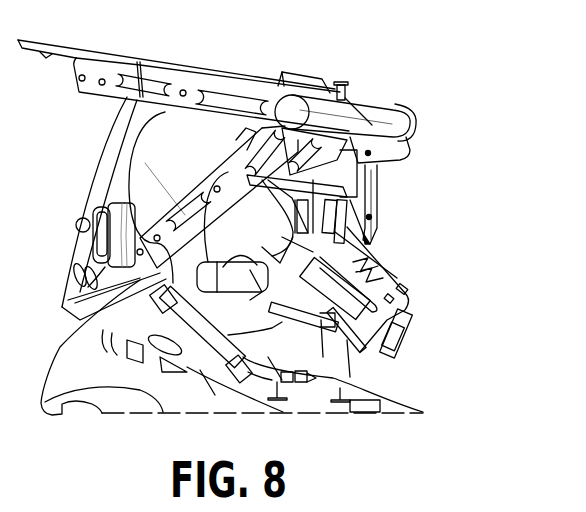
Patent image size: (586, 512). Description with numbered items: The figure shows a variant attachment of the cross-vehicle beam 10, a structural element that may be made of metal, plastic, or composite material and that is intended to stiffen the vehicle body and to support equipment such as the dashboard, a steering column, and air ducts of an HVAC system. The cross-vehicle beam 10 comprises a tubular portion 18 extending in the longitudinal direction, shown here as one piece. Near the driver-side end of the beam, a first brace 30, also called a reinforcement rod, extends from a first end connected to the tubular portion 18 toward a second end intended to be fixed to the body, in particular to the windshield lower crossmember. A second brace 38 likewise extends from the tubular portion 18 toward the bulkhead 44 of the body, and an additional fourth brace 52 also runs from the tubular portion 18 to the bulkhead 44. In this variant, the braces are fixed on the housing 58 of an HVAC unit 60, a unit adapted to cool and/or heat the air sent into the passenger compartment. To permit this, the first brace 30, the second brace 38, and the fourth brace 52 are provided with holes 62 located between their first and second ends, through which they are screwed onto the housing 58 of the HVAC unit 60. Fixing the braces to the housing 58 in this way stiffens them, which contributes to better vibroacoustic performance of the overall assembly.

The cross-vehicle beam 10 is at (415, 98).
The tubular portion 18 is at (357, 110).
The first brace 30 is at (222, 98).
The second brace 38 is at (173, 223).
The bulkhead 44 is at (103, 147).
The fourth brace 52 is at (375, 170).
The housing 58 is at (373, 333).
The HVAC unit 60 is at (432, 300).
The holes 62 is at (183, 90).